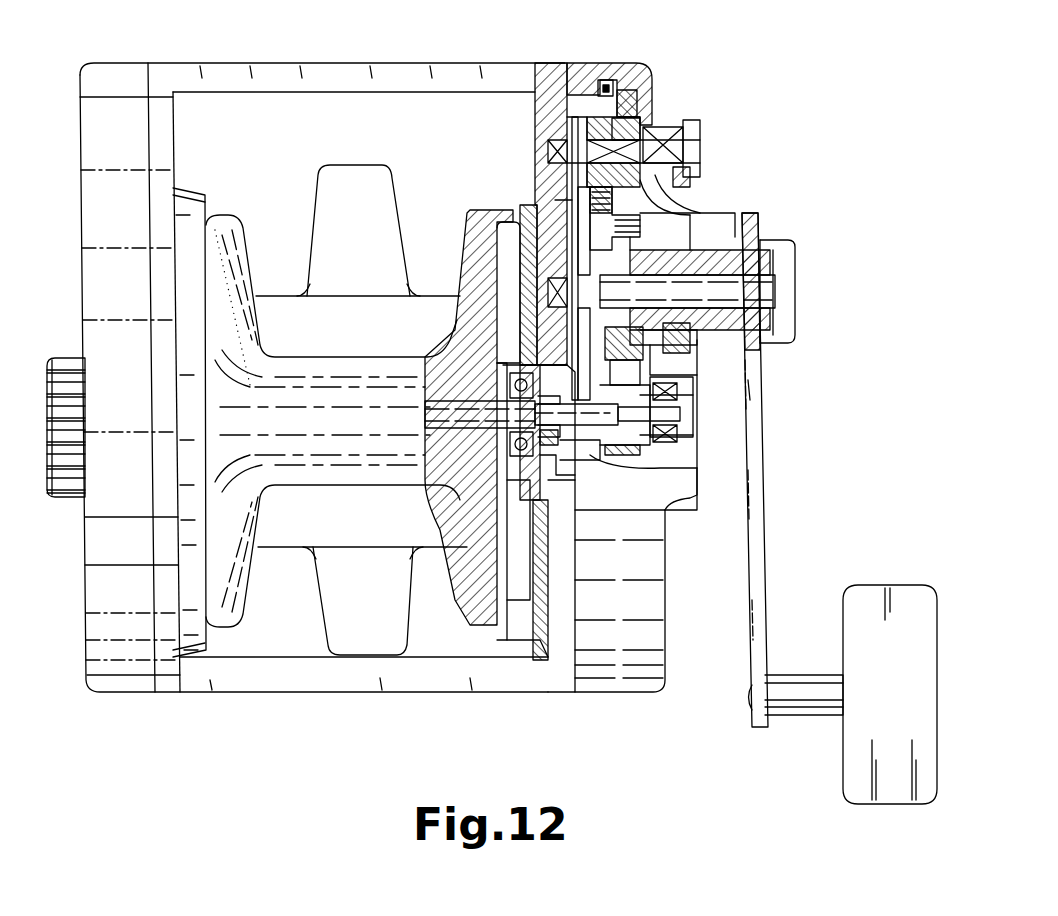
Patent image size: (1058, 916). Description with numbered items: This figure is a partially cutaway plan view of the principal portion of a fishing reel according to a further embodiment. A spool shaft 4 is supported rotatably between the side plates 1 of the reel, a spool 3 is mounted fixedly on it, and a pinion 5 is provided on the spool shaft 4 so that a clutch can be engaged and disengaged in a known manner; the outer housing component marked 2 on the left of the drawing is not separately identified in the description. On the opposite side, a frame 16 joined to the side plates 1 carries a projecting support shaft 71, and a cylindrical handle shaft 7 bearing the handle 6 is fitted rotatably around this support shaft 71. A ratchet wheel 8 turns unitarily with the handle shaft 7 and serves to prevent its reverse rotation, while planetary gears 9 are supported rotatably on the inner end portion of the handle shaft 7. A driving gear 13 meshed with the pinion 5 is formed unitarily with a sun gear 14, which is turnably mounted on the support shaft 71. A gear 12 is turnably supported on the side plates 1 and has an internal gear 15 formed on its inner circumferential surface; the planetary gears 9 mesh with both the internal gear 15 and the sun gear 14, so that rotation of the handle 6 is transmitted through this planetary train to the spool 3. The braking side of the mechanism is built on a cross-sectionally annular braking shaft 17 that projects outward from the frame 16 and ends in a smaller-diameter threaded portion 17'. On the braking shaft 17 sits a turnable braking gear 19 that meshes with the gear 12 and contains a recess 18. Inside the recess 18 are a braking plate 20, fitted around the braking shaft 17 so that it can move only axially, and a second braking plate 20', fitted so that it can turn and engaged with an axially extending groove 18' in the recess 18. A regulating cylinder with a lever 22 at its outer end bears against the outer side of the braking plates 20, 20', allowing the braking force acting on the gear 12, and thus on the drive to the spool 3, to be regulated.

The side plates 1 is at (629, 62).
The reel frame housing 2 is at (135, 85).
The spool 3 is at (292, 370).
The spool shaft 4 is at (443, 432).
The pinion 5 is at (600, 442).
The handle 6 is at (758, 505).
The handle shaft 7 is at (775, 315).
The support shaft 71 is at (765, 288).
The ratchet wheel 8 is at (675, 250).
The planetary gears 9 is at (540, 198).
The gear 12 is at (630, 410).
The driving gear 13 is at (600, 240).
The sun gear 14 is at (668, 350).
The internal gear 15 is at (670, 412).
The frame 16 is at (558, 70).
The braking shaft 17 is at (568, 145).
The smaller-diameter threaded portion 17' is at (699, 148).
The recess 18 is at (545, 249).
The axially extending groove 18' is at (654, 101).
The braking gear 19 is at (637, 95).
The braking plate 20 is at (642, 139).
The braking plate 20' is at (602, 55).
The lever 22 is at (690, 185).